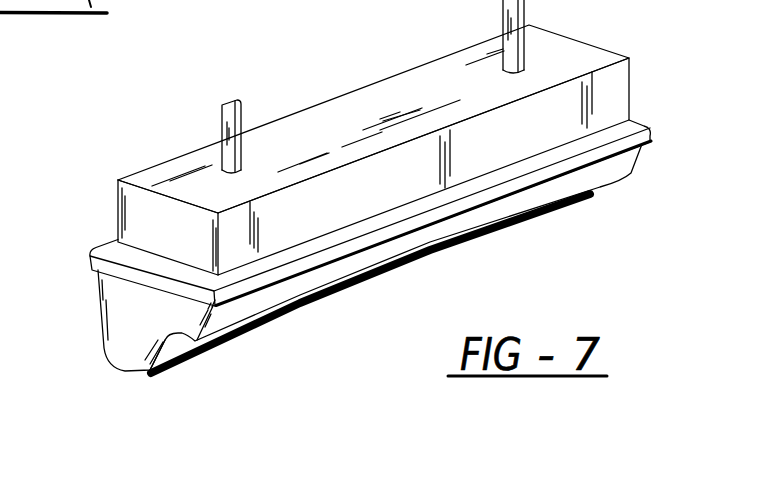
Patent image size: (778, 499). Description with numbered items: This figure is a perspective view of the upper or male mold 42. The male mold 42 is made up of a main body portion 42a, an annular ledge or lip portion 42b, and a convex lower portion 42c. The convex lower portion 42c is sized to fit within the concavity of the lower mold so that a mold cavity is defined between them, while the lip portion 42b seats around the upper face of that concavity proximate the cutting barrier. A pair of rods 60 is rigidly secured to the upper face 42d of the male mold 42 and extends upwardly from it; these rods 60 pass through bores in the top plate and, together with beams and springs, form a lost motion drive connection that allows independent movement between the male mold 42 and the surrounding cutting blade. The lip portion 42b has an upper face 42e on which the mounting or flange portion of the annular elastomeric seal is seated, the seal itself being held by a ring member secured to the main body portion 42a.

The upper or male mold 42 is at (104, 198).
The main body portion 42a is at (188, 153).
The annular ledge or lip portion 42b is at (88, 250).
The convex lower portion 42c is at (103, 324).
The upper face 42d is at (590, 58).
The upper face of lip 42e is at (135, 372).
The rods 60 is at (247, 120).